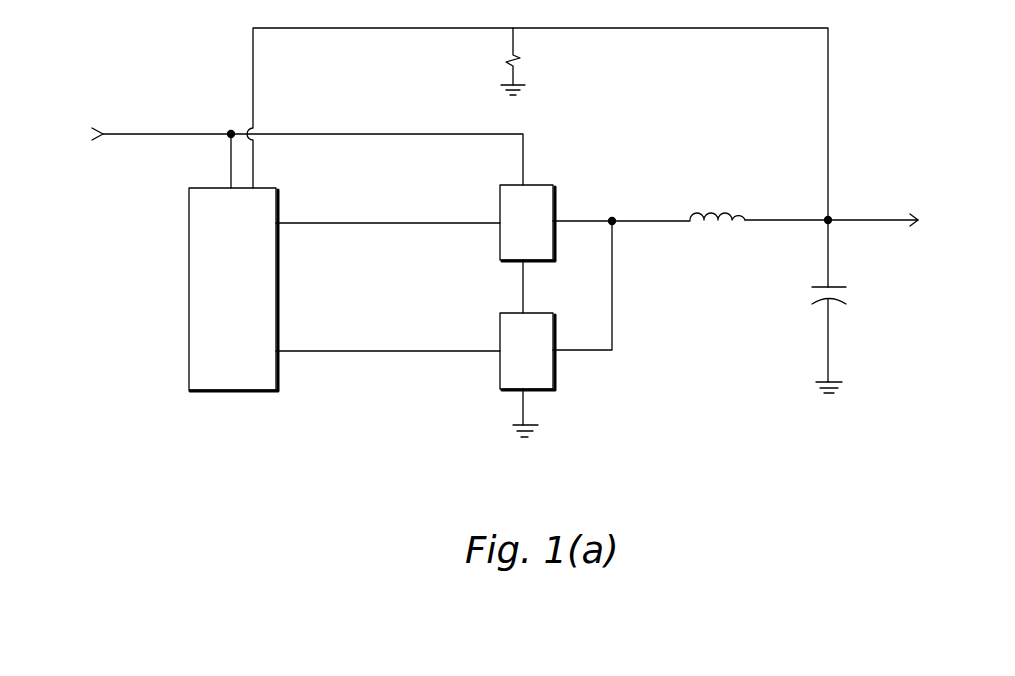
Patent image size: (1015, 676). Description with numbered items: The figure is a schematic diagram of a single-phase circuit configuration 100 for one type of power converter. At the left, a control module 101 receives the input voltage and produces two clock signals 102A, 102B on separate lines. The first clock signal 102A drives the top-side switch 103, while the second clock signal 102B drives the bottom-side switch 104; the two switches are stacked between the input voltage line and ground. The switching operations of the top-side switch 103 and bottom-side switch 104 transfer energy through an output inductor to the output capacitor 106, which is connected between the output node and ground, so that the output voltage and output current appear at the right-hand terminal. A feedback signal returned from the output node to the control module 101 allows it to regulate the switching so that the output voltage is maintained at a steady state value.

The single-phase circuit configuration 100 is at (548, 495).
The control module 101 is at (247, 293).
The clock signal 102A is at (360, 223).
The clock signal 102B is at (360, 351).
The top-side switch 103 is at (500, 245).
The bottom-side switch 104 is at (500, 378).
The output capacitor 106 is at (729, 211).